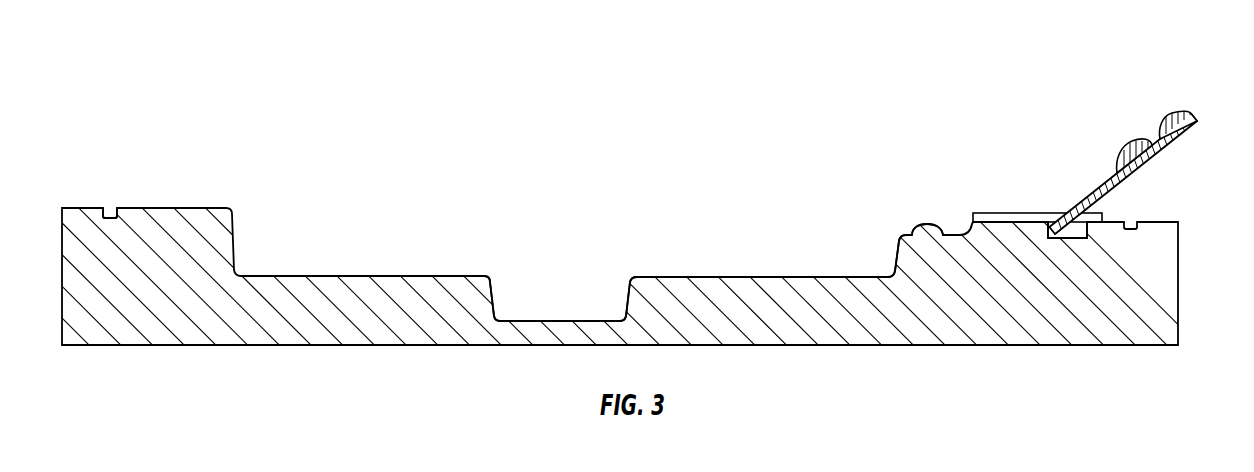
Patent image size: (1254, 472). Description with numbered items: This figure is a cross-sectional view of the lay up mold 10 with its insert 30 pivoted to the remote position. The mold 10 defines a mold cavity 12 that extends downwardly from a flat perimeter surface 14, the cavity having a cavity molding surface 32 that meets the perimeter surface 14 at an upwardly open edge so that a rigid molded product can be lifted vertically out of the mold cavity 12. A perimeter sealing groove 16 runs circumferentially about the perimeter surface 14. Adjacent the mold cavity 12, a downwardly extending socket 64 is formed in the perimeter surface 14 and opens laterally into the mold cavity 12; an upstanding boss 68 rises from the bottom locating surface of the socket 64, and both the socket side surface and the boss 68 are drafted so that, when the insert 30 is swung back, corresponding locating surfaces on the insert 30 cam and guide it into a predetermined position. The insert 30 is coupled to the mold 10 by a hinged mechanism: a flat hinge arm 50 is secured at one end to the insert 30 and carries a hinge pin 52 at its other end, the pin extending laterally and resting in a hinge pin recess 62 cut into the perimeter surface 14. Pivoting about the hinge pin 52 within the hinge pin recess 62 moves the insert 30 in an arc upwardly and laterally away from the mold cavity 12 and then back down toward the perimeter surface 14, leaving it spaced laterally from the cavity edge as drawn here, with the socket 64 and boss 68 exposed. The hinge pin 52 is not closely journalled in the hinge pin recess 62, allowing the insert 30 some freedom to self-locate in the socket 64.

The lay up mold 10 is at (230, 70).
The mold cavity 12 is at (511, 230).
The perimeter surface 14 is at (167, 208).
The perimeter sealing groove 16 is at (110, 210).
The insert 30 is at (1141, 172).
The cavity molding surface 32 is at (806, 270).
The hinge arm 50 is at (1110, 179).
The hinge pin 52 is at (1058, 222).
The hinge pin recess 62 is at (1081, 238).
The socket 64 is at (942, 205).
The upstanding boss 68 is at (923, 224).